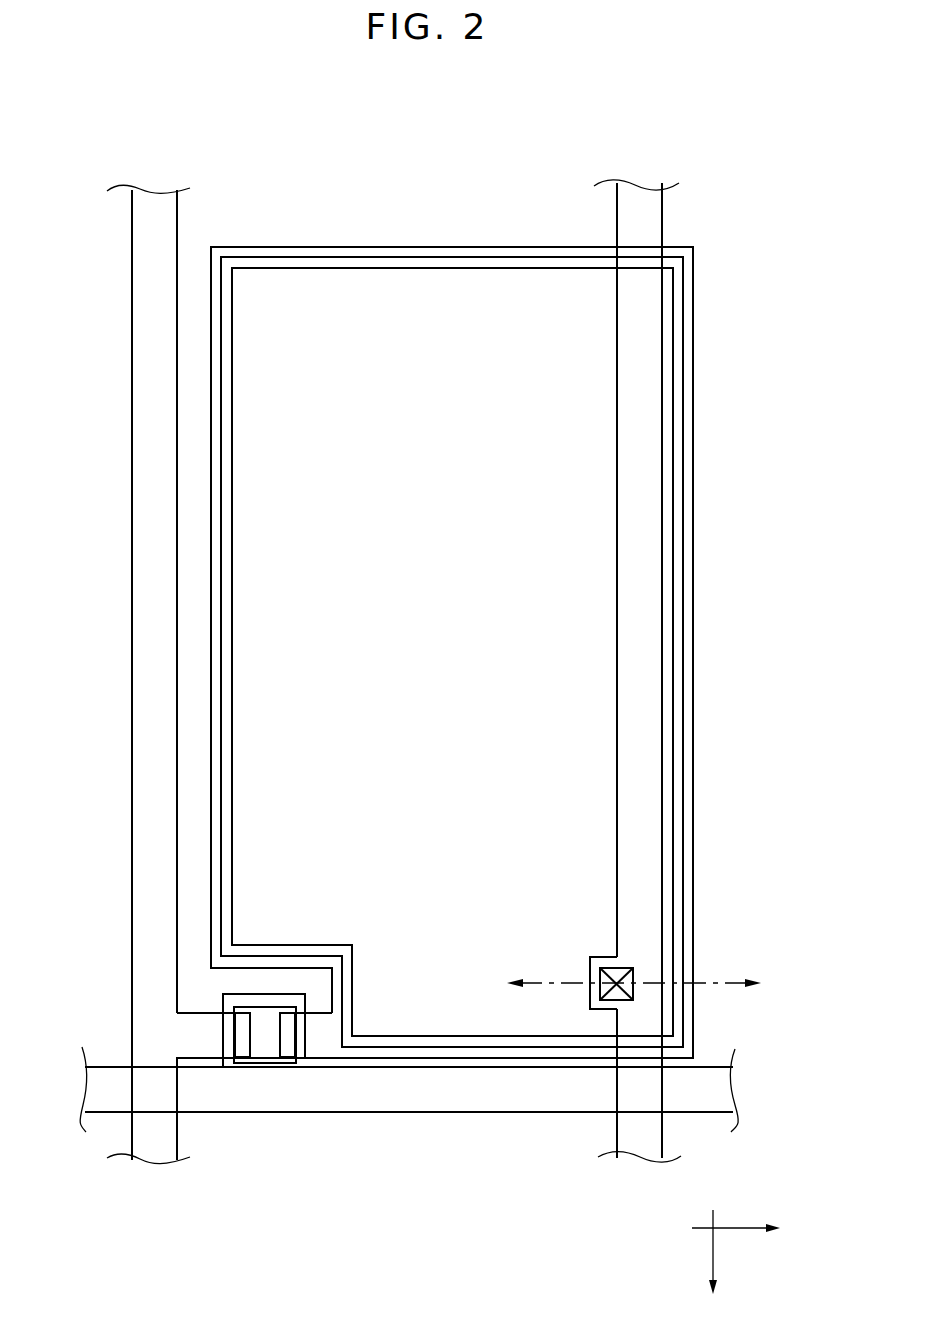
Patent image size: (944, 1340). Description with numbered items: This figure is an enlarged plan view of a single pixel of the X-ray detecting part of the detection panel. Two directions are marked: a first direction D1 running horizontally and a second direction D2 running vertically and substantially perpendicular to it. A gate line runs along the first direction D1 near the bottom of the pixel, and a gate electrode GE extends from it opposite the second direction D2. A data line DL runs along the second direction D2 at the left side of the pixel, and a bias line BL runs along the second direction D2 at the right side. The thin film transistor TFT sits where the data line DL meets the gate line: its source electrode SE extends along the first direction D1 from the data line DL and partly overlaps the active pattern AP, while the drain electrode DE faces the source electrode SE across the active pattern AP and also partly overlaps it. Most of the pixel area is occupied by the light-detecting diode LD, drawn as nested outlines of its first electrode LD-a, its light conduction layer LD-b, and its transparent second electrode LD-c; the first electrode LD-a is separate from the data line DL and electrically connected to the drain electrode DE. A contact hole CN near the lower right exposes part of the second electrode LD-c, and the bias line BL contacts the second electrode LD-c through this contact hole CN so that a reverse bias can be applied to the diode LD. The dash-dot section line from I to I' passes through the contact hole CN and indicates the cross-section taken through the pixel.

The data line DL is at (148, 618).
The bias line BL is at (650, 617).
The gate electrode GE is at (240, 1058).
The light-detecting diode LD is at (412, 178).
The first electrode LD-a is at (262, 248).
The light conduction layer LD-b is at (325, 260).
The second electrode LD-c is at (389, 280).
The thin film transistor TFT is at (353, 1197).
The active pattern AP is at (264, 1060).
The source electrode SE is at (203, 1043).
The drain electrode DE is at (288, 1052).
The contact hole CN is at (625, 968).
The section line I is at (621, 983).
The section line I' is at (763, 983).
The first direction D1 is at (750, 1228).
The second direction D2 is at (714, 1265).